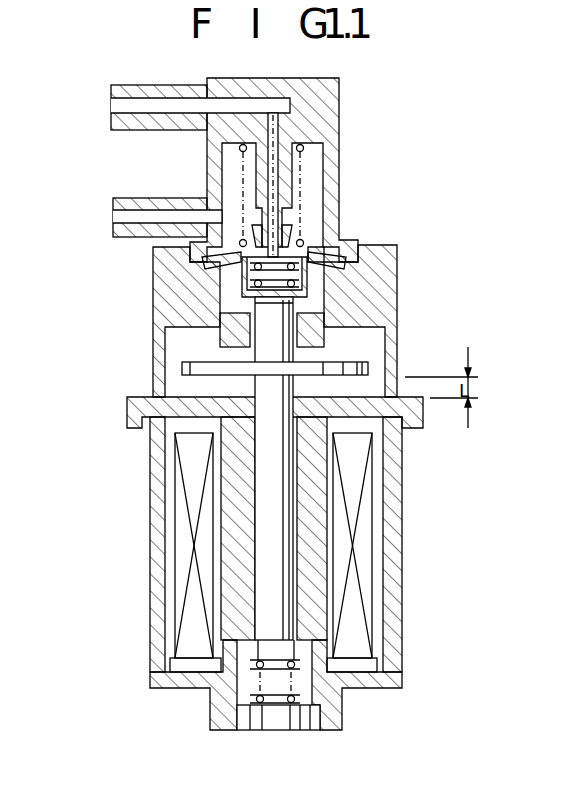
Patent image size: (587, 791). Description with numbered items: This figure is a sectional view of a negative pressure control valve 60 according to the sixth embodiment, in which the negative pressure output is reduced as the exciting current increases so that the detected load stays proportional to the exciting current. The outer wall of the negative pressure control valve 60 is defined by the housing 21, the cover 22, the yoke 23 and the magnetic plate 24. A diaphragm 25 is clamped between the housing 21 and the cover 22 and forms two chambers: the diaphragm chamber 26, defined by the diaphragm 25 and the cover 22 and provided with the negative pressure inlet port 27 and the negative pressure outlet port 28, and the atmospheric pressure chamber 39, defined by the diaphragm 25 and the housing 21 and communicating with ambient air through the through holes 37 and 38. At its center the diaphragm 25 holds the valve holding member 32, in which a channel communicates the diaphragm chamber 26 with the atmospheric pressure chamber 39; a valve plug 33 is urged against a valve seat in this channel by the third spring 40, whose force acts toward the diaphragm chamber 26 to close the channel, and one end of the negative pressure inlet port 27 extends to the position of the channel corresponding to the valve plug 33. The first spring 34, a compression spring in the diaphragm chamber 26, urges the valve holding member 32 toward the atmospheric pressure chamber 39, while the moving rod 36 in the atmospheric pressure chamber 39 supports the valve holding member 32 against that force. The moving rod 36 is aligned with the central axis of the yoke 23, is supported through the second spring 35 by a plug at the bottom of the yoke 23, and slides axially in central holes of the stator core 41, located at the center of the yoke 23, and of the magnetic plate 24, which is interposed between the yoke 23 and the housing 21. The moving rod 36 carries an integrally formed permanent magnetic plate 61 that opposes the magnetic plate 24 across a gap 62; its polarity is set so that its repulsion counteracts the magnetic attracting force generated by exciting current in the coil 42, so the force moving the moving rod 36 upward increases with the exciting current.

The housing 21 is at (390, 302).
The cover 22 is at (325, 78).
The yoke 23 is at (402, 583).
The magnetic plate 24 is at (398, 422).
The diaphragm 25 is at (322, 252).
The diaphragm chamber 26 is at (312, 168).
The negative pressure inlet port 27 is at (142, 85).
The negative pressure outlet port 28 is at (120, 198).
The valve holding member 32 is at (253, 228).
The valve plug 33 is at (205, 264).
The first spring 34 is at (295, 210).
The second spring 35 is at (298, 680).
The moving rod 36 is at (280, 528).
The through hole 37 is at (237, 322).
The through hole 38 is at (165, 345).
The atmospheric pressure chamber 39 is at (318, 285).
The third spring 40 is at (302, 300).
The stator core 41 is at (232, 565).
The coil 42 is at (190, 635).
The negative pressure control valve 60 is at (398, 197).
The permanent magnetic plate 61 is at (185, 368).
The gap 62 is at (158, 435).